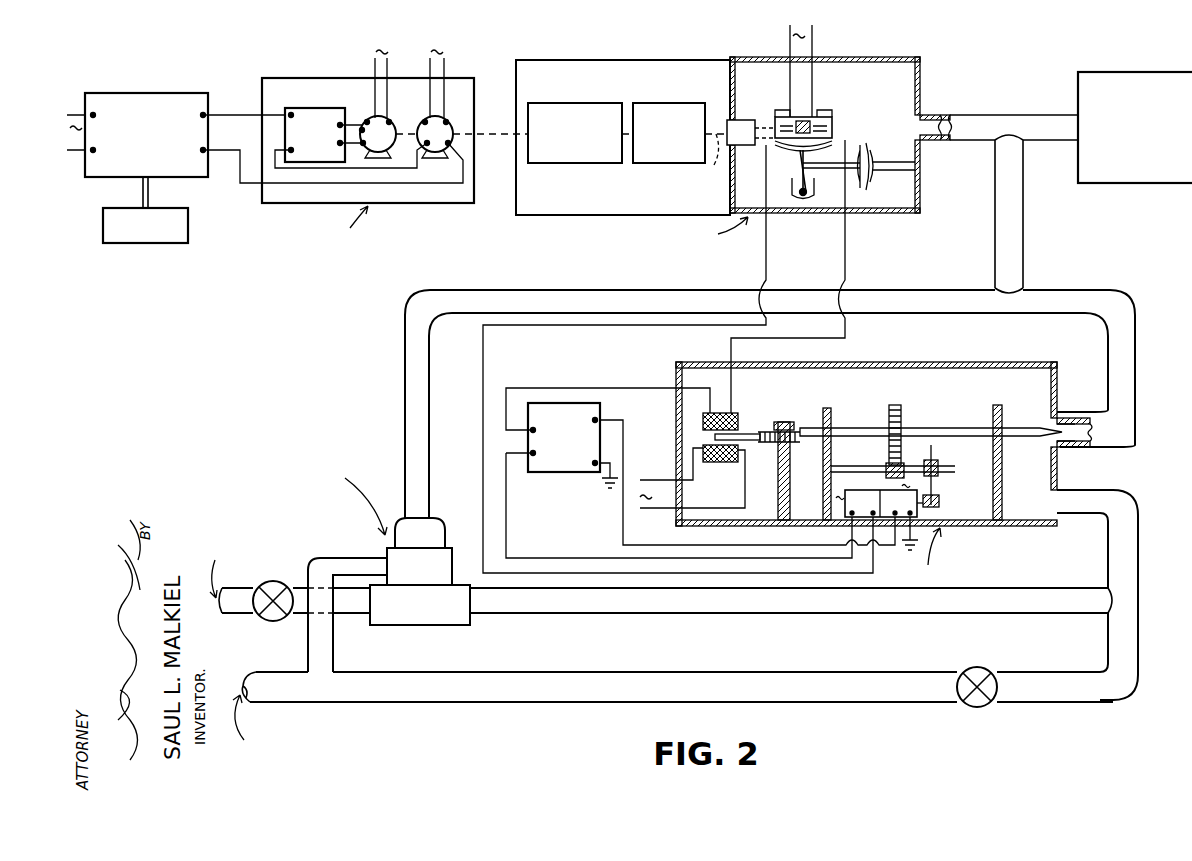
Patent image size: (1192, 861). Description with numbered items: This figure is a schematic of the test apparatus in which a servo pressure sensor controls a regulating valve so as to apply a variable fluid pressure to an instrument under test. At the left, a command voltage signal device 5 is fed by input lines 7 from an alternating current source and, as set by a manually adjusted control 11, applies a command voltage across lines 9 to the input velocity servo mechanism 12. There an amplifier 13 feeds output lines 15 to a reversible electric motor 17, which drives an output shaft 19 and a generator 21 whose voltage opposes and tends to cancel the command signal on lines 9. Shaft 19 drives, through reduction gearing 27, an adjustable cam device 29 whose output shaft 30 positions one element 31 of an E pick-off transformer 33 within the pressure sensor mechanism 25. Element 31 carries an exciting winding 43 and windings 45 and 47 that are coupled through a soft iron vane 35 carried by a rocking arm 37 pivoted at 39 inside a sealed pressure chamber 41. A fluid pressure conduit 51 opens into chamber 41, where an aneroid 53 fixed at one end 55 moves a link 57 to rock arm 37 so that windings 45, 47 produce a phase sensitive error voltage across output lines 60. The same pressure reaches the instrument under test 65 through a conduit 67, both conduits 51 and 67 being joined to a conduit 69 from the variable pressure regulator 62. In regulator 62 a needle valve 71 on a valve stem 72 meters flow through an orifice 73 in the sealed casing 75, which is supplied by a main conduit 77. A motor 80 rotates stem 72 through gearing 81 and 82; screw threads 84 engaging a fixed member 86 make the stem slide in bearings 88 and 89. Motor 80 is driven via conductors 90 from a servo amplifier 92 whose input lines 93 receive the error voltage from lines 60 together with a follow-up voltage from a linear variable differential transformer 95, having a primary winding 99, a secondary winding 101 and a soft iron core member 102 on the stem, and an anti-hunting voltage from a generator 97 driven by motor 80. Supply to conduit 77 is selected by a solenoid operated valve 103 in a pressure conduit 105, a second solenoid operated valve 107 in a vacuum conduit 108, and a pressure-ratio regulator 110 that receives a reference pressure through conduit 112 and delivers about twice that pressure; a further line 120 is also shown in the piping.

The command voltage signal device 5 is at (137, 93).
The input lines 7 is at (77, 150).
The output signal lines 9 is at (227, 148).
The control 11 is at (185, 243).
The input velocity servo mechanism 12 is at (315, 78).
The amplifier 13 is at (312, 108).
The output lines 15 is at (353, 142).
The reversible electric motor 17 is at (394, 117).
The output shaft 19 is at (408, 133).
The generator 21 is at (448, 122).
The pressure sensor mechanism 25 is at (612, 60).
The reduction gearing 27 is at (570, 103).
The adjustable cam device 29 is at (667, 103).
The output shaft 30 is at (712, 161).
The adjustable element of E pick-off transformer 31 is at (822, 117).
The E pick-off transformer 33 is at (861, 135).
The soft iron vane 35 is at (800, 152).
The rocking arm 37 is at (808, 180).
The pivot 39 is at (806, 197).
The sealed pressure chamber 41 is at (845, 57).
The exciting winding 43 is at (800, 120).
The pick-off winding 45 is at (780, 128).
The pick-off winding 47 is at (832, 128).
The fluid pressure conduit 51 is at (948, 116).
The aneroid 53 is at (870, 186).
The fixed end of aneroid 55 is at (912, 168).
The link 57 is at (835, 163).
The output lines 60 is at (845, 262).
The variable pressure regulator 62 is at (879, 454).
The instrument under test 65 is at (1133, 72).
The pressure conduit 67 is at (1046, 140).
The conduit 69 is at (1018, 241).
The needle valve 71 is at (1040, 438).
The valve stem 72 is at (950, 428).
The orifice 73 is at (1078, 448).
The sealed casing 75 is at (920, 362).
The main conduit 77 is at (1140, 544).
The motor 80 is at (886, 470).
The gearing 81 is at (952, 465).
The gearing 82 is at (878, 420).
The screw threads 84 is at (776, 444).
The threaded member 86 is at (780, 494).
The bearing 88 is at (826, 410).
The bearing 89 is at (1003, 412).
The conductors 90 is at (614, 470).
The servo amplifier 92 is at (603, 420).
The signal input lines 93 is at (520, 452).
The linear variable differential transformer 95 is at (715, 450).
The anti-hunting generator 97 is at (855, 468).
The primary exciting winding 99 is at (715, 439).
The secondary winding 101 is at (710, 412).
The soft iron core member 102 is at (745, 456).
The solenoid operated valve 103 is at (275, 622).
The pressure supply conduit 105 is at (242, 615).
The solenoid operated valve 107 is at (988, 671).
The vacuum conduit 108 is at (726, 672).
The pressure-ratio regulator 110 is at (452, 528).
The reference pressure conduit 112 is at (530, 290).
The vacuum branch conduit 120 is at (346, 557).